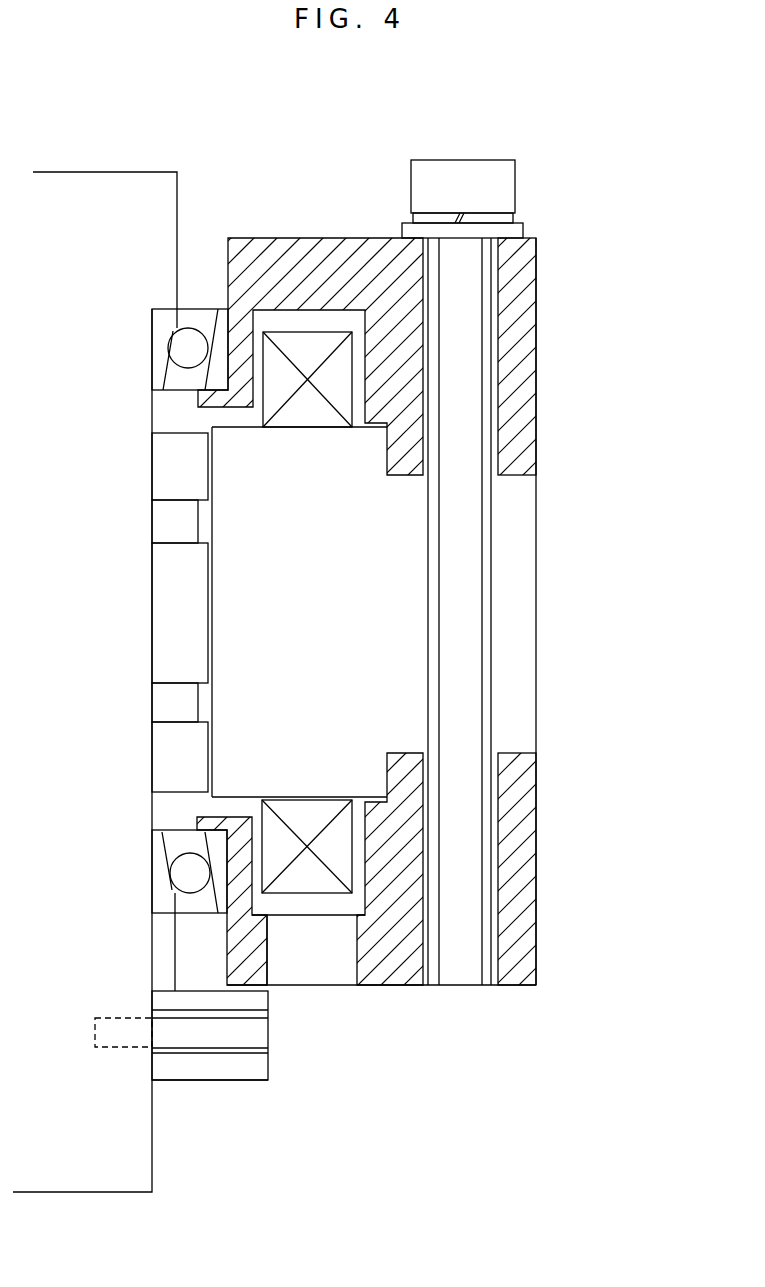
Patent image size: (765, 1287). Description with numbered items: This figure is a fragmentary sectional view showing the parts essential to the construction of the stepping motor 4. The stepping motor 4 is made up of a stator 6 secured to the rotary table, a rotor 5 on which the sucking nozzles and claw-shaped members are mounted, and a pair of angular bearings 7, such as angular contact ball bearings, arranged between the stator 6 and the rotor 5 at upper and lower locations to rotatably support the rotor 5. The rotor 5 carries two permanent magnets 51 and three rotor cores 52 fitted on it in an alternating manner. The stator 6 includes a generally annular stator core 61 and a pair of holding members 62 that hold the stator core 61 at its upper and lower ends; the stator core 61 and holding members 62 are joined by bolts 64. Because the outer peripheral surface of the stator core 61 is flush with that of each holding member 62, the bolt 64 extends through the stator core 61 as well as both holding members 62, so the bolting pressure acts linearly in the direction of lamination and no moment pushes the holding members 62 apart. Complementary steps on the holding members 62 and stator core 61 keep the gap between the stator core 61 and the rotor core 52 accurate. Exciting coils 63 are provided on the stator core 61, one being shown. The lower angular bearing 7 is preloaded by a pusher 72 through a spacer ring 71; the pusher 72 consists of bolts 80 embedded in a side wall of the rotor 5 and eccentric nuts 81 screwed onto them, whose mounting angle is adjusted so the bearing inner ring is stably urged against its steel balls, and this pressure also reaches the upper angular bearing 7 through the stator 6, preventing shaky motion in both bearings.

The stepping motor 4 is at (618, 242).
The rotor 5 is at (112, 195).
The stator 6 is at (557, 343).
The angular bearing 7 is at (160, 347).
The permanent magnet 51 is at (165, 527).
The rotor core 52 is at (165, 472).
The stator core 61 is at (518, 628).
The holding member 62 is at (523, 398).
The exciting coil 63 is at (305, 415).
The bolt 64 is at (500, 188).
The spacer ring 71 is at (158, 946).
The pusher 72 is at (290, 1078).
The bolt 80 is at (255, 1032).
The nut 81 is at (217, 1067).